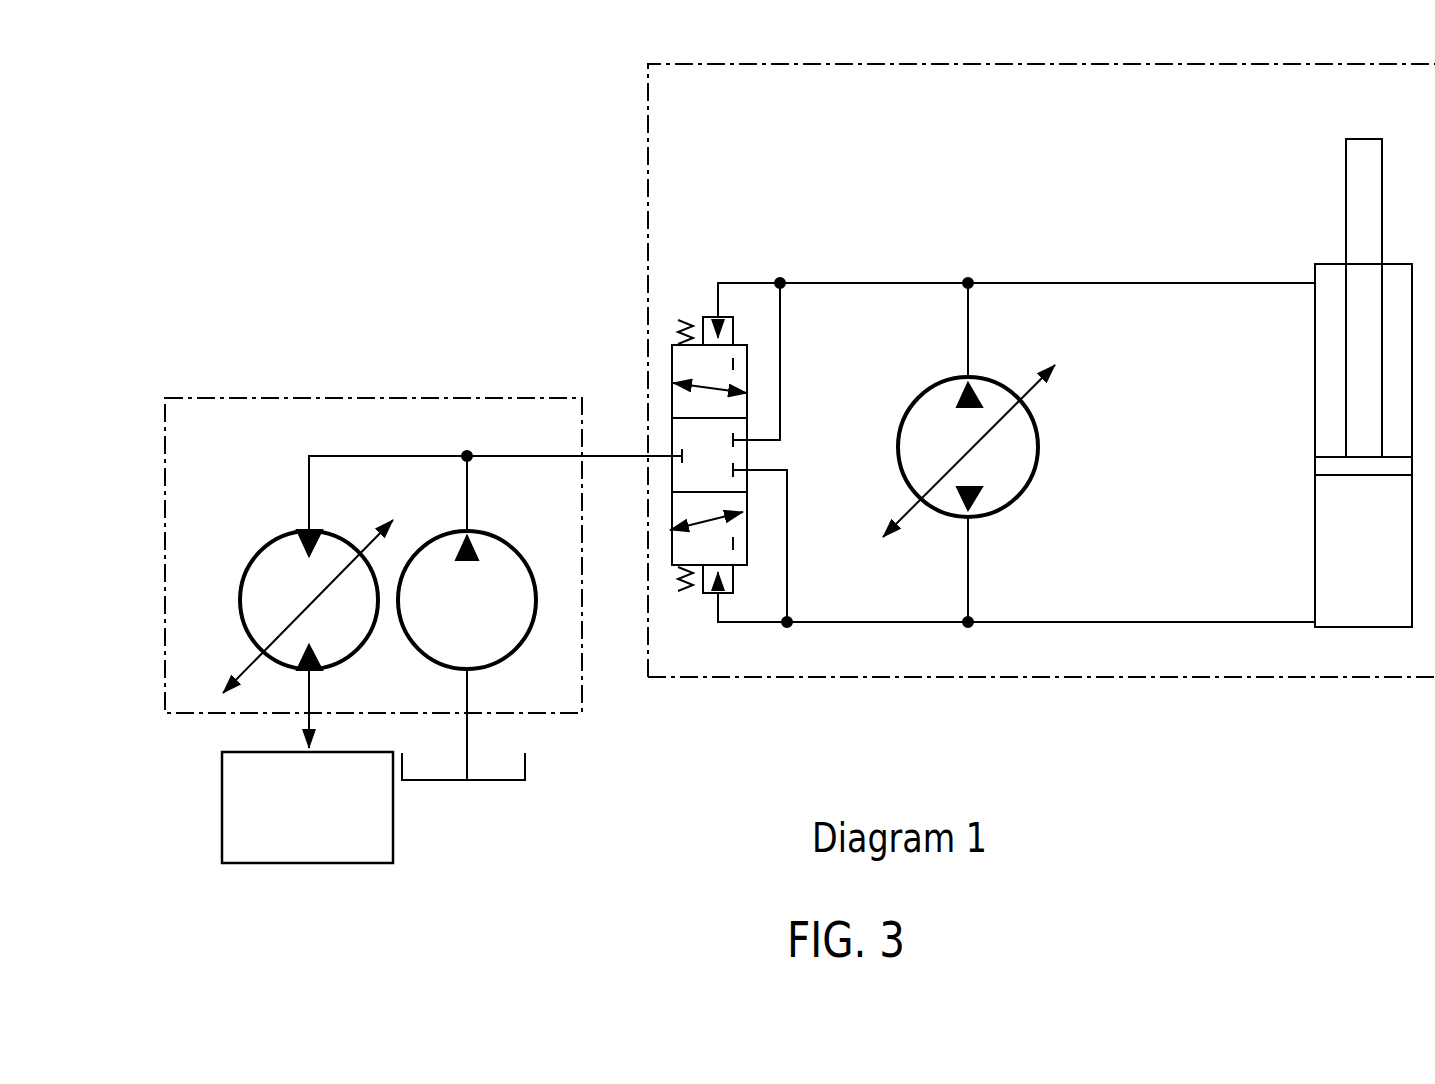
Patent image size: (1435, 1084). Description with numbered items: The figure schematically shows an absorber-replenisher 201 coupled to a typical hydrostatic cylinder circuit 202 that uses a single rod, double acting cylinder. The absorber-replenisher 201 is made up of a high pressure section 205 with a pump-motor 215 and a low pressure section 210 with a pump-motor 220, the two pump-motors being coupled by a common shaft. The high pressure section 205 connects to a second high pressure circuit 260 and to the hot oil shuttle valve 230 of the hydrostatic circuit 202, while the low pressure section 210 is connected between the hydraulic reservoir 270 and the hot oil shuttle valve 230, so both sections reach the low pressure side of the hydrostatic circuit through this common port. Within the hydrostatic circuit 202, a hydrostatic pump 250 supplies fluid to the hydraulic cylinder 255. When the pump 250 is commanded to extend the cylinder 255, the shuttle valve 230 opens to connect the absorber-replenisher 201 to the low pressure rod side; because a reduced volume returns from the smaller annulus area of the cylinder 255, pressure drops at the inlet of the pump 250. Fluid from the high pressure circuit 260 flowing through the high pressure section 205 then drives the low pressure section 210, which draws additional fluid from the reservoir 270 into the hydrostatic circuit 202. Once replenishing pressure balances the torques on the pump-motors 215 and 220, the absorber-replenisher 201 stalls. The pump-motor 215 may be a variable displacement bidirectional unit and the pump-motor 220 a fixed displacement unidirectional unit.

The absorber-replenisher 201 is at (165, 455).
The hydrostatic circuit 202 is at (1035, 690).
The high pressure section 205 is at (290, 465).
The low pressure section 210 is at (500, 451).
The pump-motor 215 is at (242, 576).
The pump-motor 220 is at (479, 581).
The hot oil shuttle valve 230 is at (758, 549).
The hydrostatic pump 250 is at (1006, 377).
The hydraulic cylinder 255 is at (1305, 493).
The high pressure circuit 260 is at (285, 863).
The hydraulic reservoir 270 is at (521, 727).